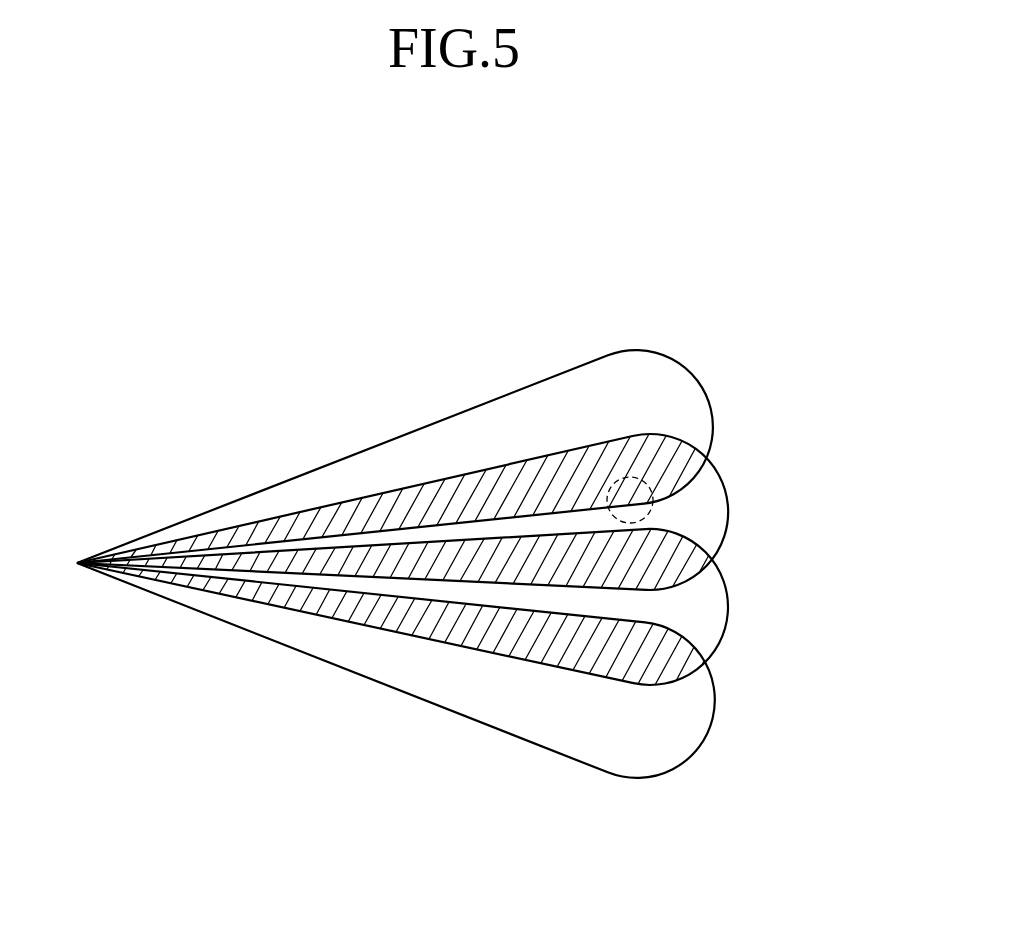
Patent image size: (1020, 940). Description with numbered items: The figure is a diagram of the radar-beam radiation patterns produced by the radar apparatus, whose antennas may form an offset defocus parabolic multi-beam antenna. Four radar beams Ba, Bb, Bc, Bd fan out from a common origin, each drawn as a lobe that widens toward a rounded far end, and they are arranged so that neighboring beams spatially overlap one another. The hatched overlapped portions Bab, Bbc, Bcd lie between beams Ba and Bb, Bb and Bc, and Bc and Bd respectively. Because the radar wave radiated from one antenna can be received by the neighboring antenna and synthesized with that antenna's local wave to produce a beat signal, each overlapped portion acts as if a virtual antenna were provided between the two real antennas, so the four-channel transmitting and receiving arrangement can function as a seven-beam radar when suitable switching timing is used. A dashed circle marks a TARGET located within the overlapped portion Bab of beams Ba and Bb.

The beam radiation pattern Ba is at (689, 370).
The beam radiation pattern Bb is at (730, 509).
The beam radiation pattern Bc is at (729, 607).
The beam radiation pattern Bd is at (712, 720).
The overlap region of beams a and b Bab is at (673, 430).
The overlap region of beams b and c Bbc is at (689, 542).
The overlap region of beams c and d Bcd is at (694, 649).
The target TARGET is at (645, 484).